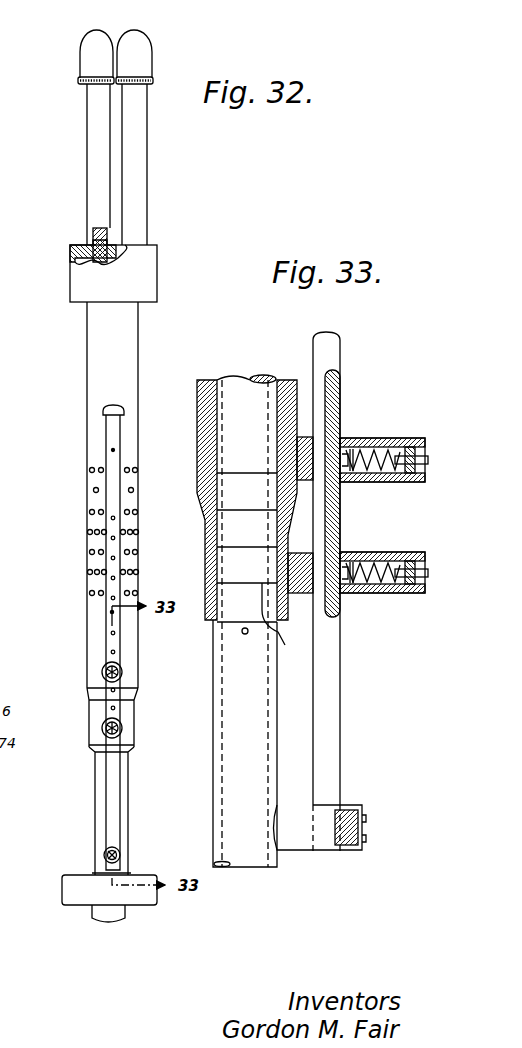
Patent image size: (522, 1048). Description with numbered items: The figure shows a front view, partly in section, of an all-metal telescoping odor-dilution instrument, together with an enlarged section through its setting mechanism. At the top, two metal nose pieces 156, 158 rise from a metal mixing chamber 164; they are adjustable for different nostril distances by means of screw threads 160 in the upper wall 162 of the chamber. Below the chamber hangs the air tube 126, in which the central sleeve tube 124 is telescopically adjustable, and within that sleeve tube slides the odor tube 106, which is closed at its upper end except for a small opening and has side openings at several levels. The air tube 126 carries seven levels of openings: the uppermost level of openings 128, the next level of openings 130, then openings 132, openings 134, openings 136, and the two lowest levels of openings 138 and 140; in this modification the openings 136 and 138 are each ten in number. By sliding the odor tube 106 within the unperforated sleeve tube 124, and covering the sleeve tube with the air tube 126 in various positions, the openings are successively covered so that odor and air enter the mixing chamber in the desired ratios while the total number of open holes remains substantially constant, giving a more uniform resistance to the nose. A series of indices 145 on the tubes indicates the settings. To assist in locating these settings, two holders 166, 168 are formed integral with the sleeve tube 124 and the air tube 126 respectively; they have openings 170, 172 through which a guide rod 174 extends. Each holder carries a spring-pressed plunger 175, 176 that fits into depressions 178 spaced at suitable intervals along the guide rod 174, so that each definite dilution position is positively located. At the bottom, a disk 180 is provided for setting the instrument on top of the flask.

In FIG. 32, the odor tube 106 is at (95, 843).
In FIG. 33, the odor tube 106 is at (252, 850).
In FIG. 32, the central sleeve tube 124 is at (90, 731).
In FIG. 33, the central sleeve tube 124 is at (205, 615).
In FIG. 32, the air tube 126 is at (96, 363).
In FIG. 33, the air tube 126 is at (197, 395).
In FIG. 32, the openings 128 is at (101, 472).
In FIG. 32, the openings 130 is at (131, 490).
In FIG. 32, the openings 132 is at (98, 512).
In FIG. 32, the openings 134 is at (130, 533).
In FIG. 32, the openings 136 is at (92, 552).
In FIG. 32, the openings 138 is at (130, 574).
In FIG. 32, the openings 140 is at (95, 594).
In FIG. 33, the indices 145 is at (287, 621).
In FIG. 32, the metal nose piece 156 is at (92, 172).
In FIG. 32, the metal nose piece 158 is at (141, 186).
In FIG. 32, the screw threads 160 is at (75, 258).
In FIG. 32, the upper wall 162 is at (102, 228).
In FIG. 32, the metal mixing chamber 164 is at (146, 274).
In FIG. 32, the holder 166 is at (122, 728).
In FIG. 33, the holder 166 is at (410, 552).
In FIG. 32, the holder 168 is at (102, 672).
In FIG. 33, the holder 168 is at (405, 438).
In FIG. 33, the opening 170 is at (352, 595).
In FIG. 33, the opening 172 is at (352, 483).
In FIG. 32, the guide rod 174 is at (117, 439).
In FIG. 33, the guide rod 174 is at (313, 340).
In FIG. 33, the spring-pressed plunger 175 is at (428, 573).
In FIG. 32, the spring-pressed plunger 176 is at (122, 675).
In FIG. 33, the spring-pressed plunger 176 is at (428, 460).
In FIG. 32, the depressions 178 is at (110, 652).
In FIG. 33, the depressions 178 is at (342, 420).
In FIG. 32, the disk 180 is at (103, 912).